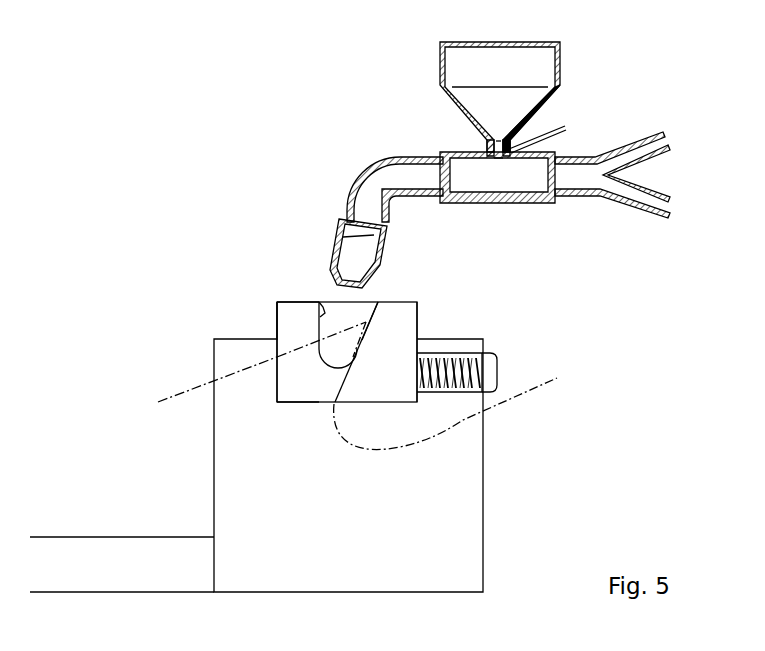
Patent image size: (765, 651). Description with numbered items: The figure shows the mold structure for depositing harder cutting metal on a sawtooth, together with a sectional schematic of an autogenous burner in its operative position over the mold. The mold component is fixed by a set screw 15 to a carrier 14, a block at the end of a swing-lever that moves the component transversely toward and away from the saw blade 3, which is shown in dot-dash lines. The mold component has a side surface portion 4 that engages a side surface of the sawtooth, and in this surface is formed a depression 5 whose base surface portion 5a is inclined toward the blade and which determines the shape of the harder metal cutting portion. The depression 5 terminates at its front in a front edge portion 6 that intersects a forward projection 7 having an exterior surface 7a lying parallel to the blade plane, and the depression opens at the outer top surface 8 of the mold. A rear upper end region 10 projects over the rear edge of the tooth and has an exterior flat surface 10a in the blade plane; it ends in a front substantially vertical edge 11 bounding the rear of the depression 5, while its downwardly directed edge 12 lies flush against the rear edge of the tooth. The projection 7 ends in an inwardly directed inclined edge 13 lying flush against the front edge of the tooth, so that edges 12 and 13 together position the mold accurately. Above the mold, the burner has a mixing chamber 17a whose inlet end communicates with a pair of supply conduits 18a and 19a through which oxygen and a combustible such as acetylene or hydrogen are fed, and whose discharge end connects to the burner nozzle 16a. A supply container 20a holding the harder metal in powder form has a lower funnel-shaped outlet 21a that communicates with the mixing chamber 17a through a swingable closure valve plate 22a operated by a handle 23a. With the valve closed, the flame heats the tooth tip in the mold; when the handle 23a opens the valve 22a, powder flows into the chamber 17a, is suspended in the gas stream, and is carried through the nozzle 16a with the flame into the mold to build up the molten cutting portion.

The saw blade 3 is at (172, 382).
The side surface portion 4 is at (298, 386).
The depression 5 is at (333, 316).
The base surface portion 5a is at (355, 310).
The front edge portion 6 is at (368, 324).
The projection 7 is at (392, 375).
The exterior surface 7a is at (390, 339).
The outer top surface 8 is at (295, 302).
The rear upper end region 10 is at (295, 317).
The exterior flat surface 10a is at (295, 327).
The front substantially vertical edge 11 is at (322, 300).
The downwardly directed edge 12 is at (298, 340).
The inwardly directed inclined edge 13 is at (342, 385).
The carrier 14 is at (450, 535).
The set screw 15 is at (487, 372).
The burner nozzle 16a is at (350, 250).
The mixing chamber 17a is at (527, 185).
The supply conduit 18a is at (633, 157).
The supply conduit 19a is at (648, 203).
The supply container 20a is at (518, 100).
The funnel-shaped outlet 21a is at (490, 137).
The closure valve plate 22a is at (498, 152).
The operating handle 23a is at (517, 148).